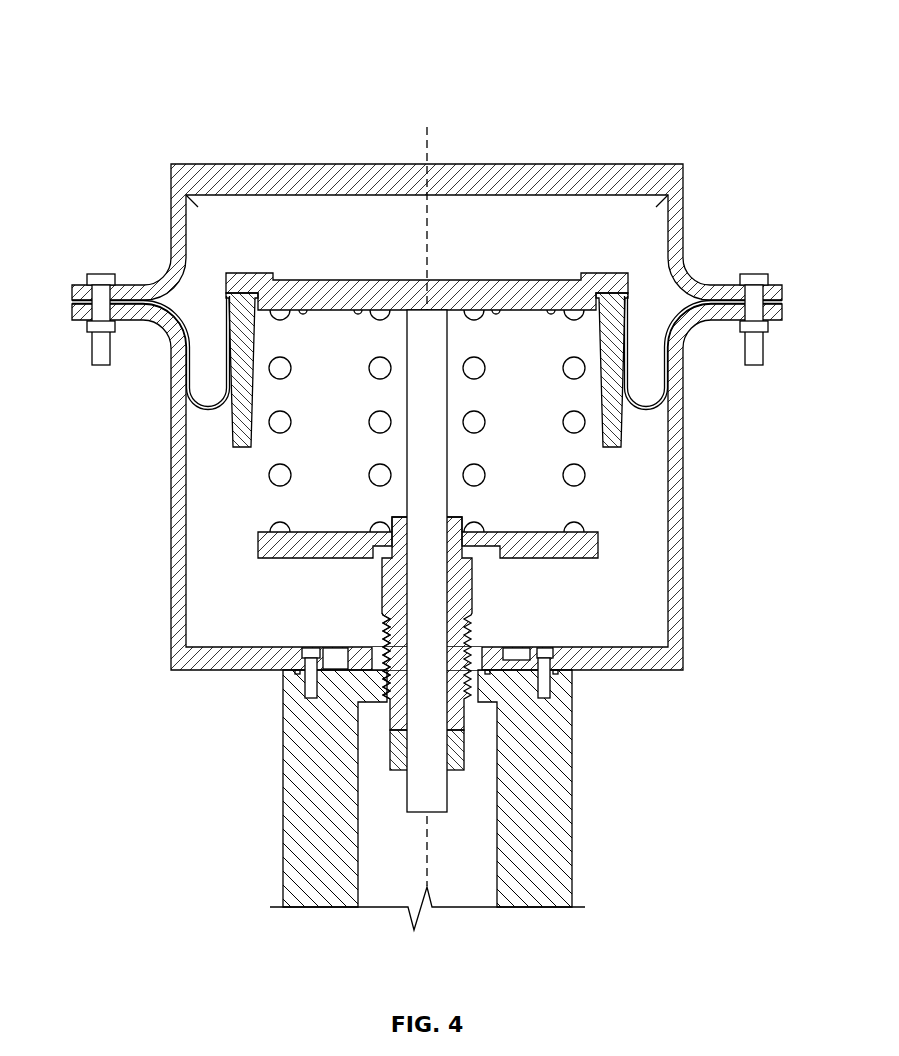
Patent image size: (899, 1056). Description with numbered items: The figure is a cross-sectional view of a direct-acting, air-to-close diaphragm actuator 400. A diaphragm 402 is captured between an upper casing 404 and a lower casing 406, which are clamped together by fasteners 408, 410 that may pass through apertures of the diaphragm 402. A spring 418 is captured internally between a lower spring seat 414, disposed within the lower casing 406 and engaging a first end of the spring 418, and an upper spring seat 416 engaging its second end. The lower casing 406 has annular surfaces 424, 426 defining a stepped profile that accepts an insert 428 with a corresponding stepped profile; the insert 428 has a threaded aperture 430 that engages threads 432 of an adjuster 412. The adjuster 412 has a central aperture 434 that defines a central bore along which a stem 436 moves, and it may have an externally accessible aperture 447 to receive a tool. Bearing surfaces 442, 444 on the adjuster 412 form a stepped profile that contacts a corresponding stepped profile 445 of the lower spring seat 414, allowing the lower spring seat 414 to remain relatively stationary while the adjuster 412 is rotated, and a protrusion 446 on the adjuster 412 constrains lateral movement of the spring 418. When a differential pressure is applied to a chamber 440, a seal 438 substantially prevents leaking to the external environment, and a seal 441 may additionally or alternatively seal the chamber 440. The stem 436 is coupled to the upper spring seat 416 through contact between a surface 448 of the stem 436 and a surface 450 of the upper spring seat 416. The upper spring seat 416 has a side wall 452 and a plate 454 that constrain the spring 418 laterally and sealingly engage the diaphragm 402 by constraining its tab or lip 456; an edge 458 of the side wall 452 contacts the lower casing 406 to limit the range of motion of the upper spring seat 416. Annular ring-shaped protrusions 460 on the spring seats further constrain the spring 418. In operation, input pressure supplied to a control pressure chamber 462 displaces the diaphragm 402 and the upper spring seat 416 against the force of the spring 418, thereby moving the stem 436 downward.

The actuator 400 is at (150, 50).
The diaphragm 402 is at (627, 378).
The upper casing 404 is at (627, 188).
The lower casing 406 is at (217, 672).
The fastener 408 is at (768, 278).
The fastener 410 is at (90, 328).
The adjuster 412 is at (382, 600).
The lower spring seat 414 is at (598, 548).
The upper spring seat 416 is at (358, 310).
The spring 418 is at (291, 368).
The annular surface 424 is at (495, 647).
The annular surface 426 is at (555, 674).
The insert 428 is at (473, 713).
The threaded aperture 430 is at (388, 703).
The threads 432 is at (385, 640).
The central aperture 434 is at (393, 735).
The stem 436 is at (423, 807).
The seal 438 is at (503, 667).
The chamber 440 is at (566, 600).
The seal 441 is at (552, 674).
The bearing surface 442 is at (498, 532).
The bearing surface 444 is at (514, 558).
The stepped profile 445 is at (352, 546).
The protrusion 446 is at (398, 517).
The aperture 447 is at (418, 760).
The surface 448 is at (428, 310).
The surface 450 is at (440, 310).
The side wall 452 is at (235, 420).
The plate 454 is at (490, 310).
The lip 456 is at (627, 295).
The edge 458 is at (612, 445).
The protrusions 460 is at (303, 310).
The control pressure chamber 462 is at (553, 260).